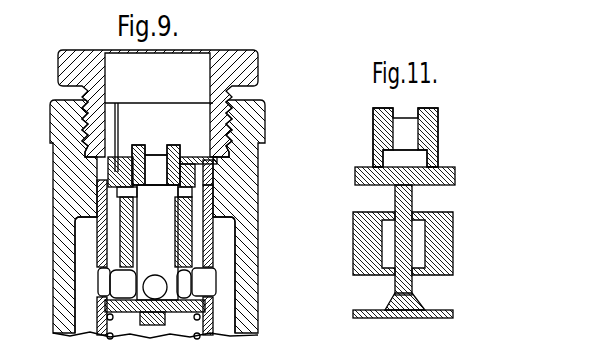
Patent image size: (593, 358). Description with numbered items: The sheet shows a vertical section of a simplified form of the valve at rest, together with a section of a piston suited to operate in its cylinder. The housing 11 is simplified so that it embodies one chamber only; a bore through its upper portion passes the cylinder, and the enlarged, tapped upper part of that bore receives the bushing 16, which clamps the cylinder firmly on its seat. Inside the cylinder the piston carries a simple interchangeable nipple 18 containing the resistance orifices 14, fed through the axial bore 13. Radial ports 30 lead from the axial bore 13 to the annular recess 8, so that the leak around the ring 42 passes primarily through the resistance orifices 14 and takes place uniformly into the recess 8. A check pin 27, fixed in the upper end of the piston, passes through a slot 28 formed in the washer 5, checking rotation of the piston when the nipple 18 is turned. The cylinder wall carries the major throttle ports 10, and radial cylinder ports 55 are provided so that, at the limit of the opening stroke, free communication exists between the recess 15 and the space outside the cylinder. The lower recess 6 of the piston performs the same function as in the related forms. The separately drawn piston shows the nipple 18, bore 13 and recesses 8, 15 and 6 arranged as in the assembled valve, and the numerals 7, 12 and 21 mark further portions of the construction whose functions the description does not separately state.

In FIG. 9, the washer 5 is at (197, 157).
In FIG. 9, the recess 6 is at (196, 283).
In FIG. 11, the recess 6 is at (403, 299).
In FIG. 9, the valve seat 7 is at (155, 287).
In FIG. 9, the annular recess 8 is at (113, 188).
In FIG. 11, the annular recess 8 is at (405, 188).
In FIG. 9, the radial ports 10 is at (98, 278).
In FIG. 9, the housing 11 is at (63, 152).
In FIG. 11, the lower member 12 is at (422, 354).
In FIG. 9, the axial bore 13 is at (157, 242).
In FIG. 11, the axial bore 13 is at (418, 220).
In FIG. 9, the resistance orifices 14 is at (156, 170).
In FIG. 11, the resistance orifices 14 is at (405, 136).
In FIG. 9, the recess 15 is at (110, 230).
In FIG. 11, the recess 15 is at (445, 243).
In FIG. 9, the bushing 16 is at (66, 69).
In FIG. 9, the nipple 18 is at (172, 143).
In FIG. 11, the nipple 18 is at (427, 112).
In FIG. 9, the cavity 21 is at (82, 257).
In FIG. 9, the check pin 27 is at (119, 104).
In FIG. 9, the slot 28 is at (122, 158).
In FIG. 9, the radial ports 30 is at (178, 193).
In FIG. 9, the ring 42 is at (204, 173).
In FIG. 9, the radial cylinder ports 55 is at (208, 257).